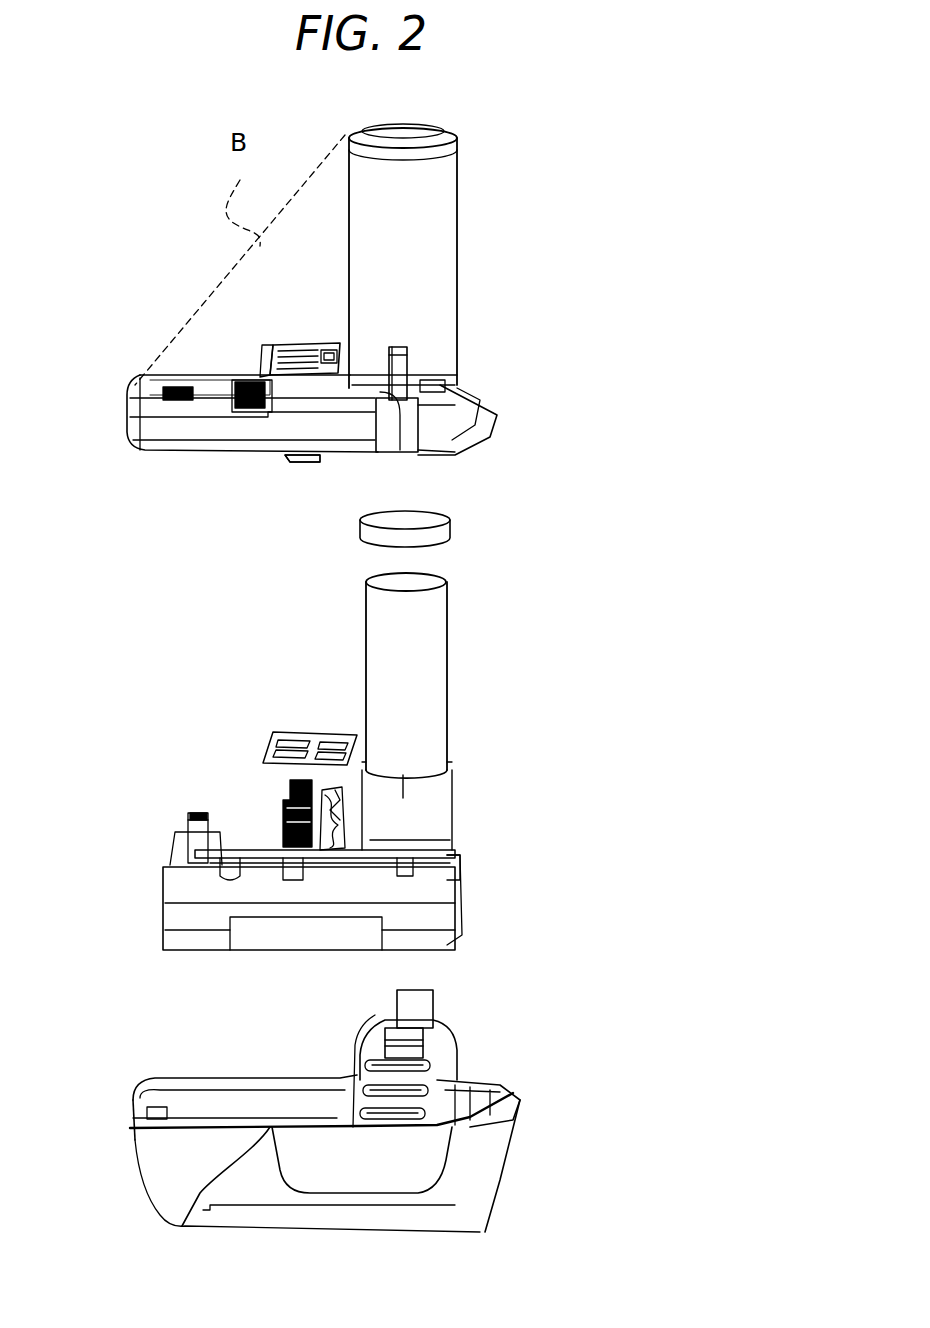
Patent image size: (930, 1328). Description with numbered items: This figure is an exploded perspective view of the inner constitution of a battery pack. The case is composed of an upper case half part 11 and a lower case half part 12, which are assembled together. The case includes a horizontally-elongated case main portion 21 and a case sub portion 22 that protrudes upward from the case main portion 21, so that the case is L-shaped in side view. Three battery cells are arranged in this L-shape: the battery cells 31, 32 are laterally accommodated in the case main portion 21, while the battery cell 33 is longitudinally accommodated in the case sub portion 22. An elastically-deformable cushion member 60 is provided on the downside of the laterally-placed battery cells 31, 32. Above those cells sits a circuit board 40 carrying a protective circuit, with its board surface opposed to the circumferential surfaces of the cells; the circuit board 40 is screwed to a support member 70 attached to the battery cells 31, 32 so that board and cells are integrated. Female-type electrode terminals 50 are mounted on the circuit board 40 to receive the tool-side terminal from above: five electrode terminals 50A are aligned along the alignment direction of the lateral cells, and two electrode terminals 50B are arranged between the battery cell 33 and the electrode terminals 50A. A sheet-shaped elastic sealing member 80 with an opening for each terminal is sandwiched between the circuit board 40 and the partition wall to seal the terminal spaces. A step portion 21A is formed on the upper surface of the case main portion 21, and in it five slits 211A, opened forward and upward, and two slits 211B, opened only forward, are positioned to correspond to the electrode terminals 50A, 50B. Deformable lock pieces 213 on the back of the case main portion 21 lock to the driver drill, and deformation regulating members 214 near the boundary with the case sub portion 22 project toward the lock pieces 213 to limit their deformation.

The upper case half part 11 is at (470, 388).
The lower case half part 12 is at (487, 1135).
The case main portion 21 is at (498, 433).
The step portion 21A is at (266, 395).
The case sub portion 22 is at (447, 227).
The battery cell 31 is at (458, 940).
The battery cell 32 is at (458, 893).
The battery cell 33 is at (433, 652).
The circuit board 40 is at (232, 833).
The electrode terminals 50 is at (247, 730).
The electrode terminals (first electrode terminal group) 50A is at (283, 795).
The electrode terminals (second electrode terminal group) 50B is at (330, 797).
The cushion member 60 is at (472, 538).
The support member 70 is at (180, 917).
The sealing member 80 is at (330, 733).
The slit 211A is at (282, 360).
The slit 211B is at (330, 347).
The lock piece 213 is at (422, 1052).
The deformation regulating member 214 is at (376, 420).